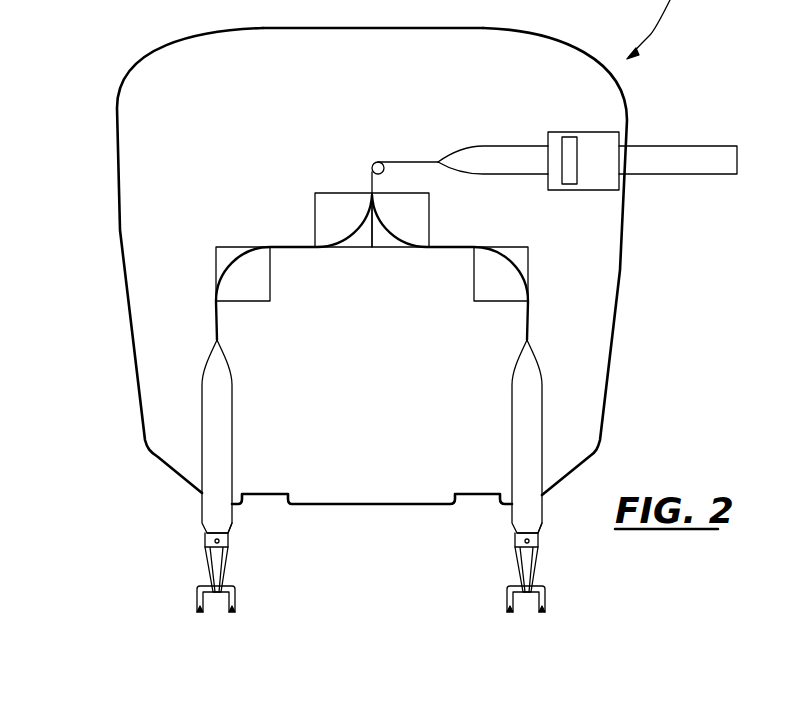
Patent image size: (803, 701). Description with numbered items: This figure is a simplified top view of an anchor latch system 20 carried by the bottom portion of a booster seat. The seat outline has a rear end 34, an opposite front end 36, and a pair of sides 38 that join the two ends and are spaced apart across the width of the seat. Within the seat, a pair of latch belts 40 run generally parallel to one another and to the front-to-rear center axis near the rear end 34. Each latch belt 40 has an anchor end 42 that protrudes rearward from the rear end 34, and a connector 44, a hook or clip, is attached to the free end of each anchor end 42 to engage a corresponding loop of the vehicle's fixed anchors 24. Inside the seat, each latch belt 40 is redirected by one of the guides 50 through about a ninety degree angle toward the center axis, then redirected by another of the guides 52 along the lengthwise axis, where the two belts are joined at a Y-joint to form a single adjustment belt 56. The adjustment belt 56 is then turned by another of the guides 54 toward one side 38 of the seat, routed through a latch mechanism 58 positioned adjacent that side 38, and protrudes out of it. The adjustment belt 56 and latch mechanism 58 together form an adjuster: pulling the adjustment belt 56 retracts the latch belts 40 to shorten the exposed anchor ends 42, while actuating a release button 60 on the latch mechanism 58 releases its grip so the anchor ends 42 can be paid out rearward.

The anchor latch system 20 is at (550, 303).
The fixed anchors 24 is at (235, 596).
The rear end 34 is at (380, 505).
The front end 36 is at (263, 28).
The sides 38 is at (626, 234).
The latch belts 40 is at (222, 445).
The anchor end 42 is at (203, 530).
The connector 44 is at (216, 557).
The belt guide 50 is at (250, 278).
The belt guide 52 is at (330, 215).
The belt guide 54 is at (380, 162).
The adjustment belt 56 is at (478, 155).
The latch mechanism 58 is at (607, 121).
The release button 60 is at (572, 163).